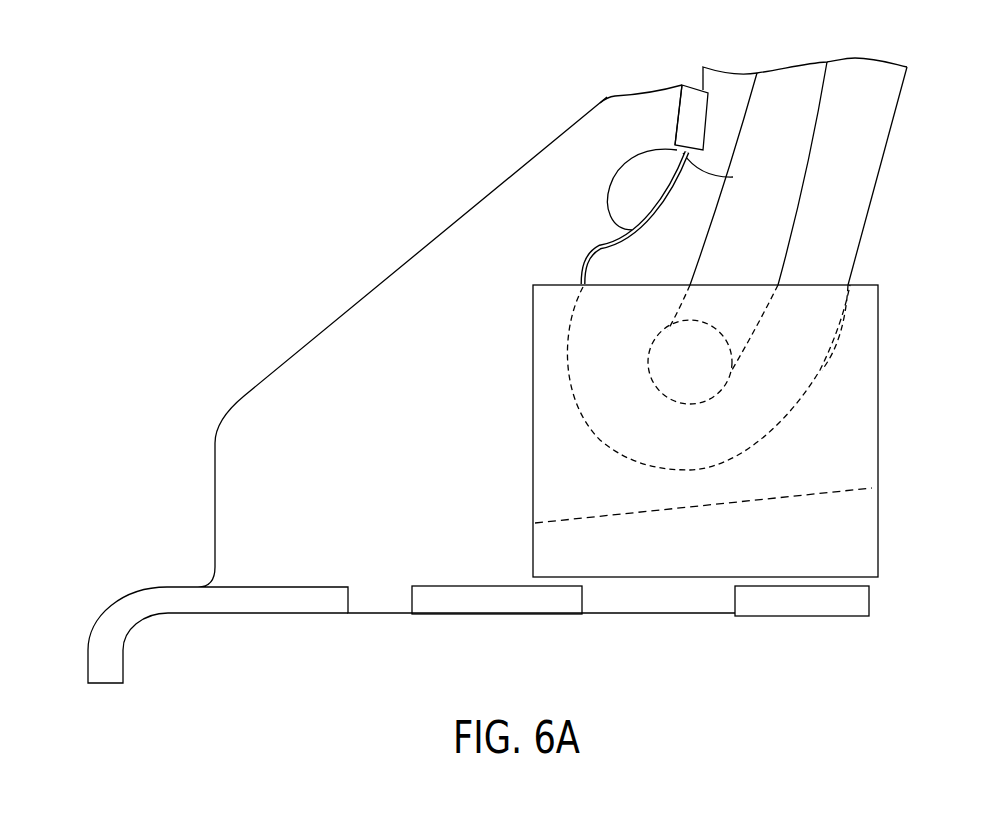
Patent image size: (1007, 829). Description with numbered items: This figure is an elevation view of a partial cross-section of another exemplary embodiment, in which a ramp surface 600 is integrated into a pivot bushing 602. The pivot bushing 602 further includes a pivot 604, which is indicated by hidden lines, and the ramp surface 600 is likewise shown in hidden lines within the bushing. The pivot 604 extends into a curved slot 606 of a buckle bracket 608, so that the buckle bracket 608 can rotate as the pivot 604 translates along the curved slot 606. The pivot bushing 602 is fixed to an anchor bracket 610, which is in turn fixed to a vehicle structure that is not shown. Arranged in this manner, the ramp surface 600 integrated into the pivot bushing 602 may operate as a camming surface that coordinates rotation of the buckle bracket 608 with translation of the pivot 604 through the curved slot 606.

The ramp surface 600 is at (835, 492).
The pivot bushing 602 is at (878, 342).
The pivot 604 is at (648, 360).
The curved slot 606 is at (673, 147).
The buckle bracket 608 is at (655, 258).
The anchor bracket 610 is at (488, 602).